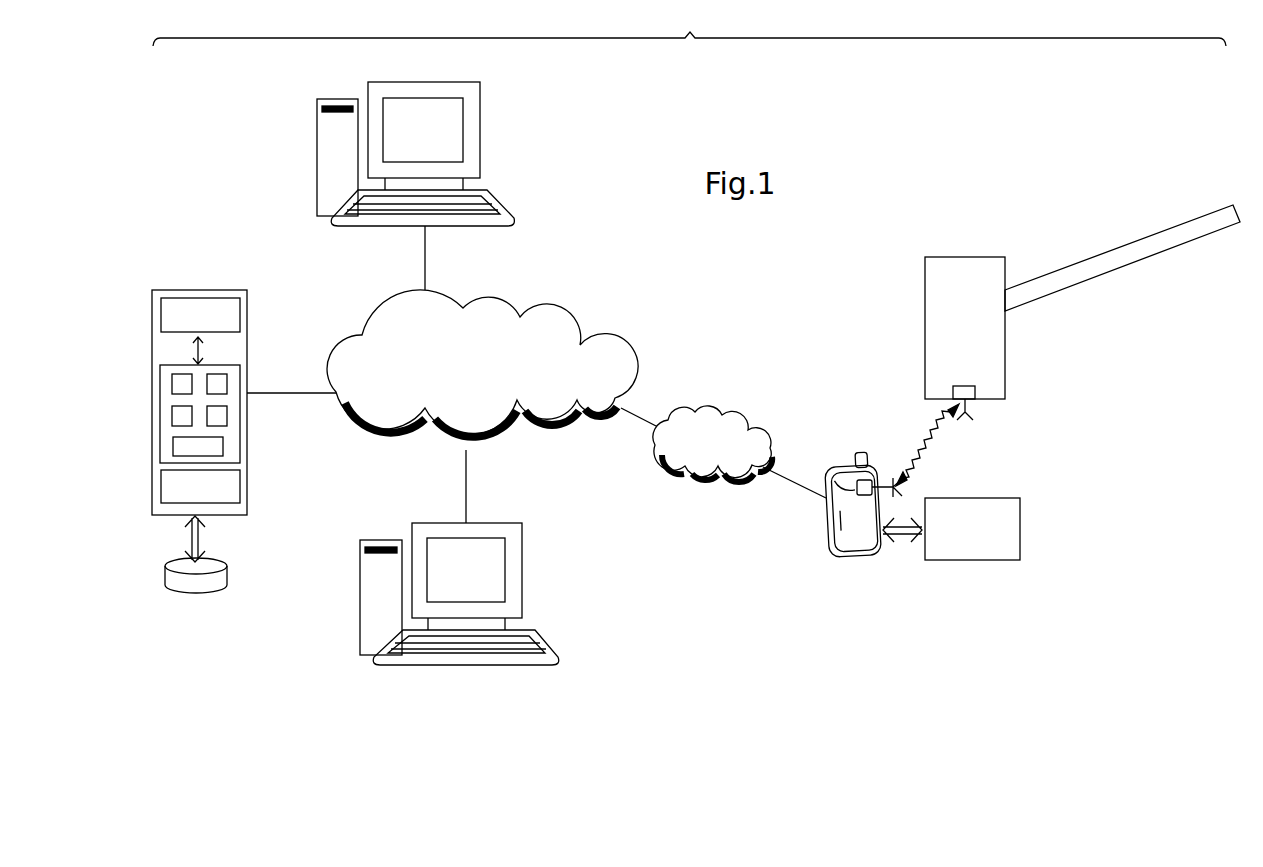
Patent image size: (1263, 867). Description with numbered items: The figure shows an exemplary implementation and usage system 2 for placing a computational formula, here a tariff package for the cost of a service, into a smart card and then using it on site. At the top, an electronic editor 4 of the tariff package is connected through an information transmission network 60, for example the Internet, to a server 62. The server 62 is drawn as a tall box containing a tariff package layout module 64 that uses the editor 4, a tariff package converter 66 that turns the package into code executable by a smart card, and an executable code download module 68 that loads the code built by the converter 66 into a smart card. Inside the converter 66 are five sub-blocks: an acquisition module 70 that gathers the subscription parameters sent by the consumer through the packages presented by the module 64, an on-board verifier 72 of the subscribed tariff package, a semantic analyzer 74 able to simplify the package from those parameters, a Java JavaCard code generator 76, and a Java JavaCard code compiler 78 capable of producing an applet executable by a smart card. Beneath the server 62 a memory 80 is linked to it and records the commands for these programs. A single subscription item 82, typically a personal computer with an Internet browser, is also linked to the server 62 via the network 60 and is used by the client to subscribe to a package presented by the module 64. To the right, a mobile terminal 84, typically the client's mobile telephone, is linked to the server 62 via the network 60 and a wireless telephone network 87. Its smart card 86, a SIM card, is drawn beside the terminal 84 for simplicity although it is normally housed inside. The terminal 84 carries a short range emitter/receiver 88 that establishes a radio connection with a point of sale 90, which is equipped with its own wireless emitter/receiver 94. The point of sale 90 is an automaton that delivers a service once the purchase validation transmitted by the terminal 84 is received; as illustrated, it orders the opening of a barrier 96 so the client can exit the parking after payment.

The implementation and usage system 2 is at (689, 27).
The electronic editor 4 is at (297, 165).
The information transmission network 60 is at (482, 363).
The server 62 is at (199, 372).
The tariff package layout module 64 is at (200, 315).
The tariff package converter 66 is at (184, 412).
The executable code download module 68 is at (200, 486).
The acquisition module 70 is at (172, 384).
The on-board verifier 72 is at (228, 384).
The semantic analyzer 74 is at (172, 416).
The Java JavaCard code generator 76 is at (228, 416).
The Java JavaCard code compiler 78 is at (164, 456).
The memory 80 is at (168, 582).
The subscription item 82 is at (343, 645).
The mobile terminal 84 is at (852, 517).
The smart card 86 is at (1020, 532).
The wireless telephone network 87 is at (712, 444).
The short range emitter/receiver 88 is at (850, 478).
The point of sale 90 is at (916, 328).
The wireless emitter/receiver 94 is at (966, 368).
The barrier 96 is at (1087, 265).